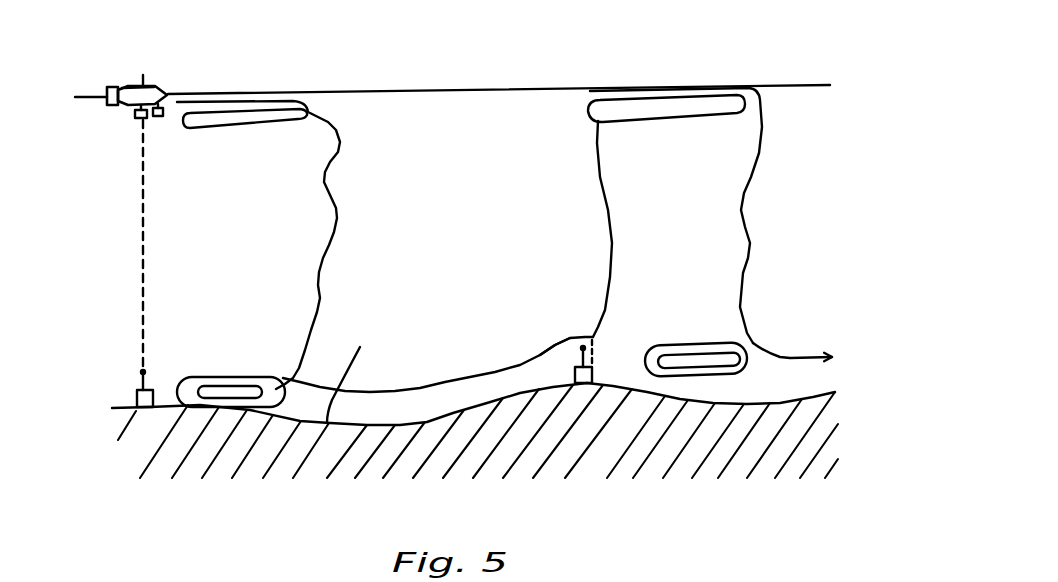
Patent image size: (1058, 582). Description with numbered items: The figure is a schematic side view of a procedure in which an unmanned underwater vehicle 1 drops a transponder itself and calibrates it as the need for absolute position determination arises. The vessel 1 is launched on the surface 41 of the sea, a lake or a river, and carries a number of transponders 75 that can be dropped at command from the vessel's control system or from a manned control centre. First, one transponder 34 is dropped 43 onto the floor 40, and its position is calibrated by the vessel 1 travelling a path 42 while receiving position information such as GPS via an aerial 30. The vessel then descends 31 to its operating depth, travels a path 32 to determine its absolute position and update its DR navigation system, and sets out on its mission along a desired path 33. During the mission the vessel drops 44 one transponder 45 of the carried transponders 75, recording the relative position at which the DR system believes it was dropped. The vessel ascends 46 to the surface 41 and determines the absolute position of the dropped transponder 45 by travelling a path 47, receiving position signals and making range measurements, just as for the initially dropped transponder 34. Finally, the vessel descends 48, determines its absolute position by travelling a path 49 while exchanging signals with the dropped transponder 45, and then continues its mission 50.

The unmanned underwater vehicle 1 is at (163, 86).
The aerial 30 is at (143, 75).
The descent of the vessel 31 is at (340, 206).
The path at operating depth 32 is at (228, 363).
The desired mission path 33 is at (393, 386).
The transponder 34 is at (113, 396).
The floor 40 is at (353, 369).
The surface 41 is at (495, 91).
The calibration path 42 is at (248, 131).
The dropping of the first transponder 43 is at (160, 246).
The dropping of a carried transponder 44 is at (604, 343).
The dropped transponder 45 is at (567, 375).
The ascent of the vessel 46 is at (608, 227).
The surface calibration path 47 is at (663, 124).
The second descent of the vessel 48 is at (747, 178).
The position-determining path 49 is at (695, 338).
The continuation of the mission 50 is at (783, 355).
The transponders 75 is at (126, 116).